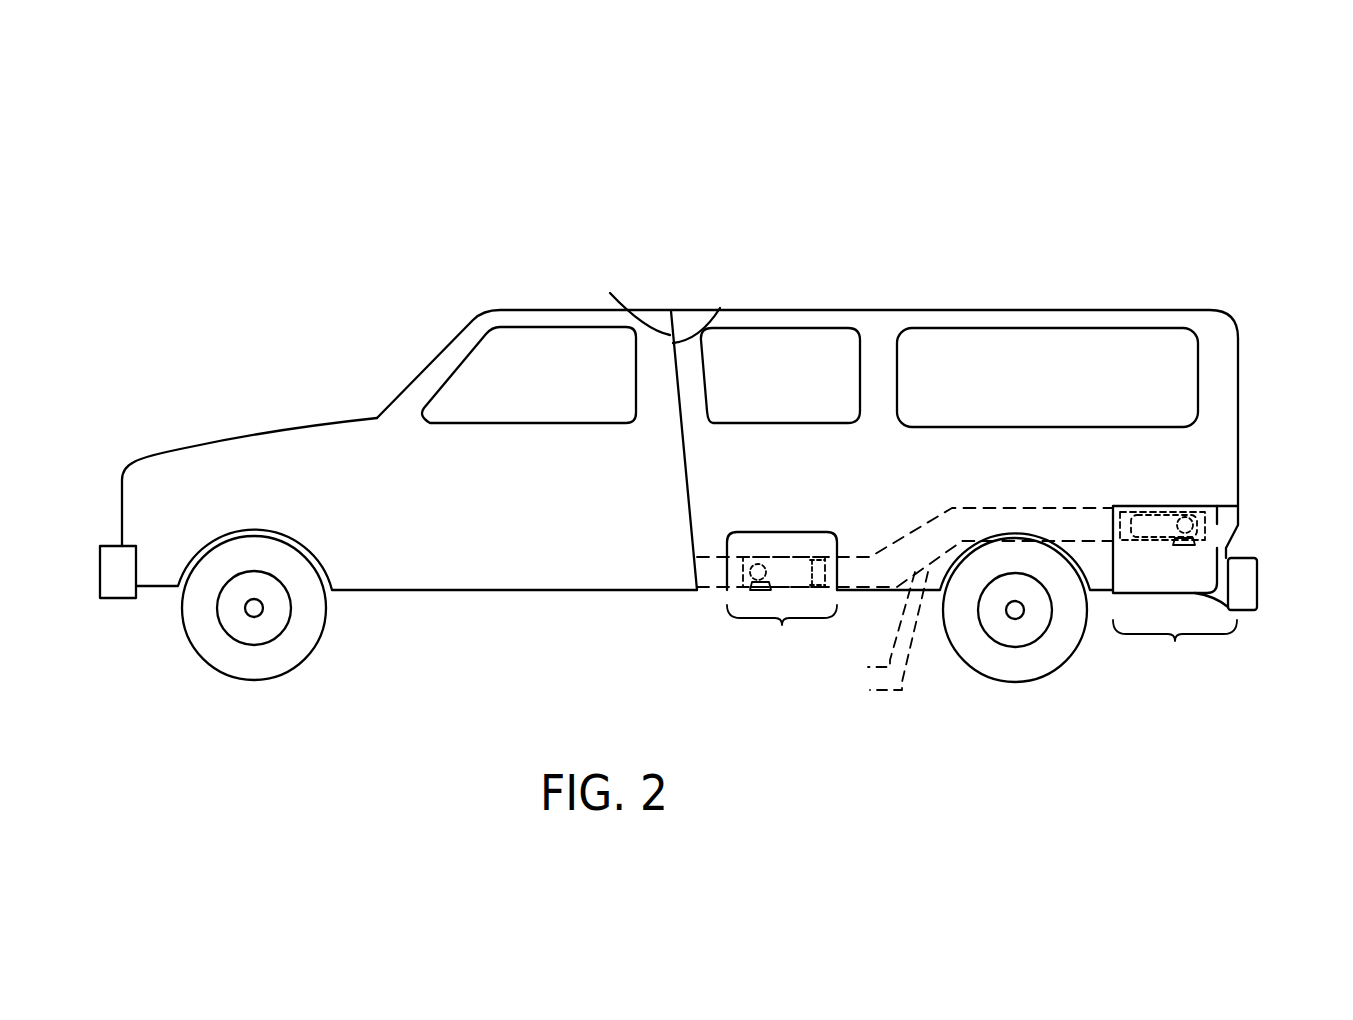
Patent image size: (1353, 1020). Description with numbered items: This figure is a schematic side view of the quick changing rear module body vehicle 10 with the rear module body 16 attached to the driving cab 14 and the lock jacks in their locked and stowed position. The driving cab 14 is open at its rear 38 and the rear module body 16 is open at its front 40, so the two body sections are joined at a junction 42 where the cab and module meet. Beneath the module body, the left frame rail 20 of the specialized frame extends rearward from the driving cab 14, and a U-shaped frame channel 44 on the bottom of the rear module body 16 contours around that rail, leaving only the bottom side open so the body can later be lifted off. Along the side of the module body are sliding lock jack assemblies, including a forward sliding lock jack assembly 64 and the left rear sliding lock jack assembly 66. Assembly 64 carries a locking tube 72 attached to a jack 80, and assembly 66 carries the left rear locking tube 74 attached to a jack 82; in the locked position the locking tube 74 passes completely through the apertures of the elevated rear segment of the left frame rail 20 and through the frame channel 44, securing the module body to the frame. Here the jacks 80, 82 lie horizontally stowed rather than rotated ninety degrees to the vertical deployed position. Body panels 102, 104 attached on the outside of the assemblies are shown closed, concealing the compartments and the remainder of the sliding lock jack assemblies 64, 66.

The quick changing rear module body vehicle 10 is at (237, 163).
The driving cab 14 is at (538, 310).
The rear module body 16 is at (1042, 310).
The left frame rail 20 is at (905, 622).
The rear of the driving cab 38 is at (625, 303).
The front of the rear module body 40 is at (707, 315).
The junction 42 is at (672, 313).
The frame channel 44 is at (905, 594).
The sliding lock jack assembly 64 is at (782, 631).
The left rear sliding lock jack assembly 66 is at (1175, 644).
The locking tube 72 is at (760, 563).
The left rear locking tube 74 is at (1178, 506).
The jack 80 is at (785, 560).
The jack 82 is at (1173, 542).
The body panel 102 is at (812, 538).
The body panel 104 is at (1228, 522).